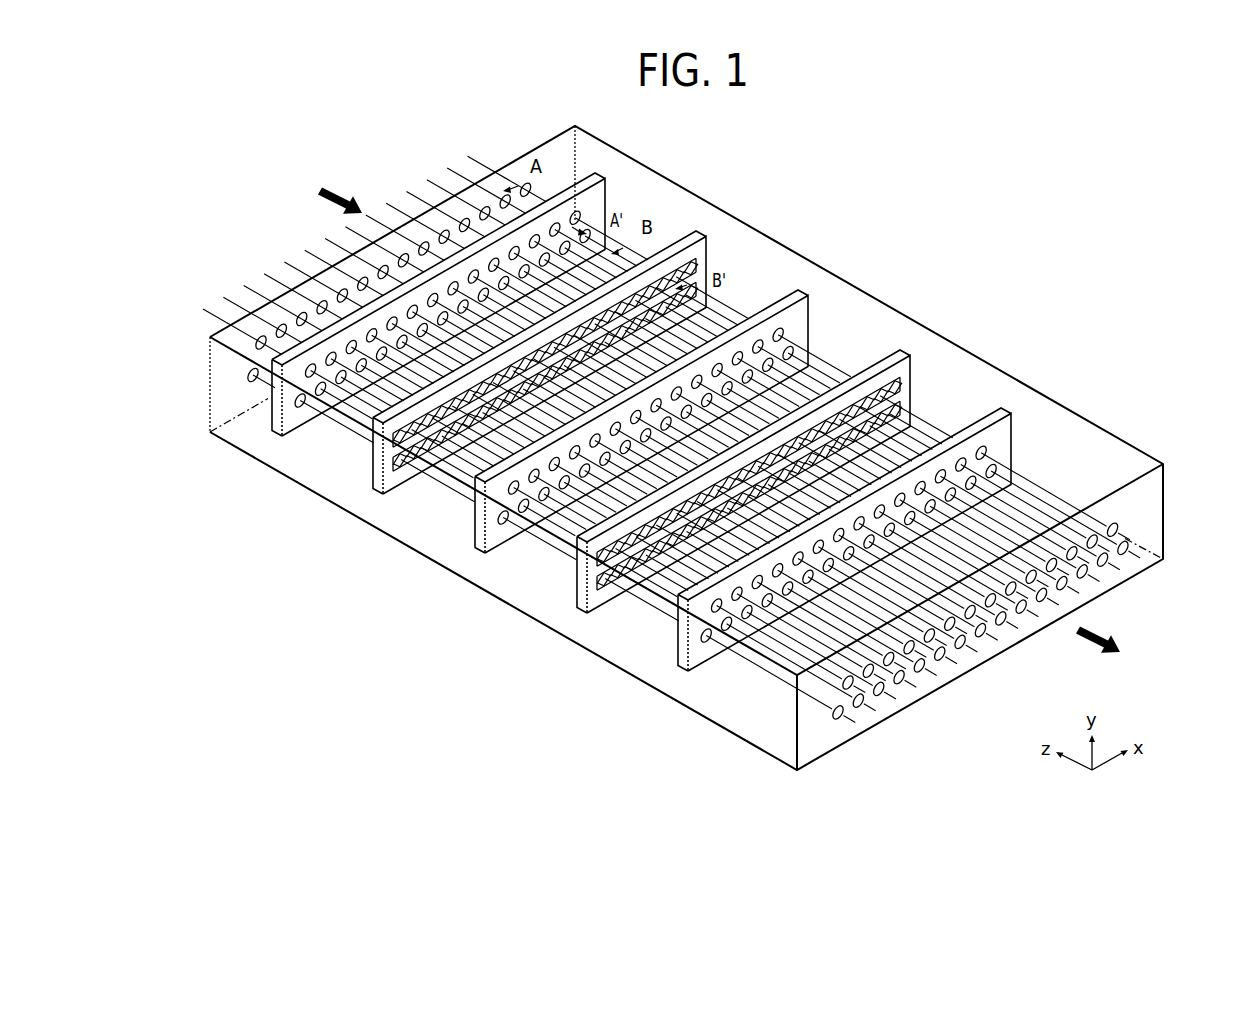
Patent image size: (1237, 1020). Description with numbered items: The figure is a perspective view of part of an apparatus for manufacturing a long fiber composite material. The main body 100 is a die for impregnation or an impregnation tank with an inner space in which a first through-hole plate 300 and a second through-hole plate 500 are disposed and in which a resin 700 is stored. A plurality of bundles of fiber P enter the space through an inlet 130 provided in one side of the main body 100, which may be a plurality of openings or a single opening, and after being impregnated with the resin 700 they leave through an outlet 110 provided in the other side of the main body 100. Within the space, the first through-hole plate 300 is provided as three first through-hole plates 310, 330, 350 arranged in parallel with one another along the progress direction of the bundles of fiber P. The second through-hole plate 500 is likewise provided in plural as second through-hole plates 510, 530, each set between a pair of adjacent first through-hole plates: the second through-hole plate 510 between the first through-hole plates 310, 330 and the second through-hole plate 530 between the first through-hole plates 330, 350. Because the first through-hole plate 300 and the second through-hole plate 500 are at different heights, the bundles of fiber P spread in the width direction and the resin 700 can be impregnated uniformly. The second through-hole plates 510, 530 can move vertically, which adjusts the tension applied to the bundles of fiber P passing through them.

The main body 100 is at (1017, 374).
The outlet 110 is at (918, 666).
The inlet 130 is at (302, 313).
The bundle of fiber P is at (233, 302).
The first through-hole plate 300 is at (949, 226).
The first through-hole plate 310 is at (605, 193).
The first through-hole plate 330 is at (812, 325).
The first through-hole plate 350 is at (992, 412).
The second through-hole plate 500 is at (409, 668).
The second through-hole plate 510 is at (377, 463).
The second through-hole plate 530 is at (580, 580).
The resin 700 is at (1037, 520).